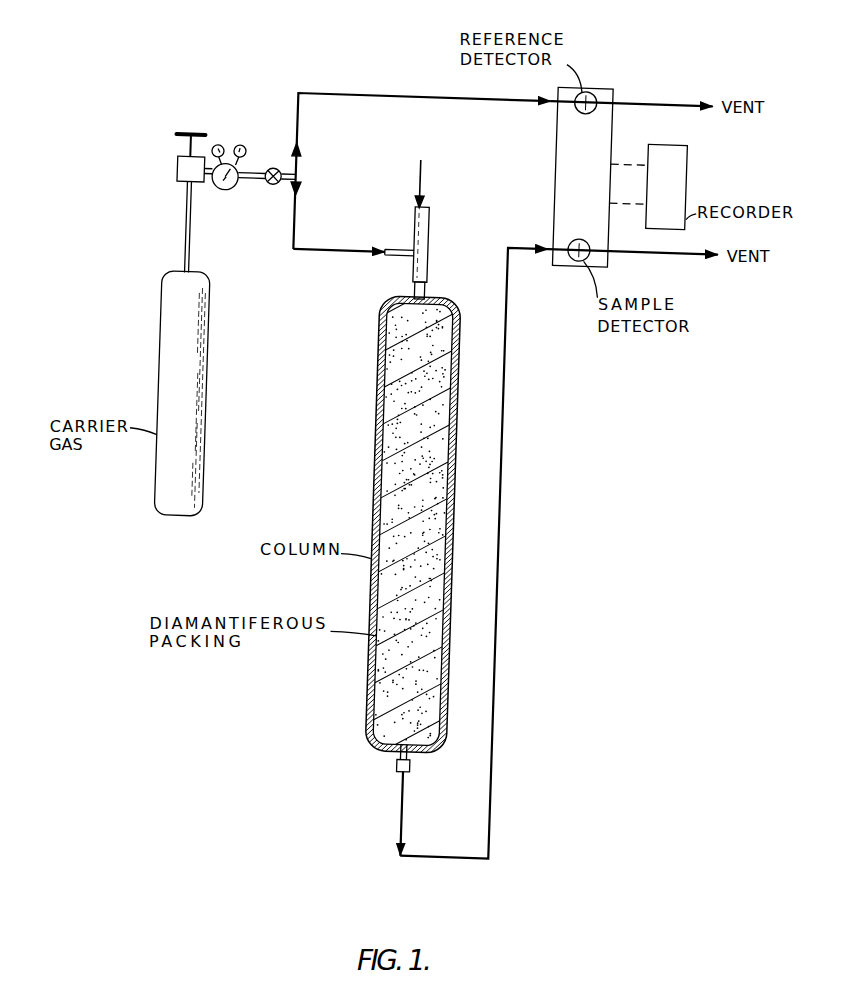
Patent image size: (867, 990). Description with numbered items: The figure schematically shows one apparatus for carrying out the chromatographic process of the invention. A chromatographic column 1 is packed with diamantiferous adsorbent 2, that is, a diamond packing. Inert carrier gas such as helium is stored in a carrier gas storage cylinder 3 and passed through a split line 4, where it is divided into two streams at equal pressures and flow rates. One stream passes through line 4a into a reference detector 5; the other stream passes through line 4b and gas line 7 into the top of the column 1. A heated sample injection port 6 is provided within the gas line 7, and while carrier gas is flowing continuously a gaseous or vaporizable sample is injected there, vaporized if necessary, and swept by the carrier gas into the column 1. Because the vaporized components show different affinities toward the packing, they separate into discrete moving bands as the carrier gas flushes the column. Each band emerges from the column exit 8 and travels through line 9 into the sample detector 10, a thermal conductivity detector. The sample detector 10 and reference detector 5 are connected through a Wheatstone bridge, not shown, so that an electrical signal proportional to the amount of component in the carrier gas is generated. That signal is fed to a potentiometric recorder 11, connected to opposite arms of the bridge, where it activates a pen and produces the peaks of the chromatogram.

The chromatographic column 1 is at (372, 372).
The diamantiferous adsorbent 2 is at (386, 430).
The carrier gas storage cylinder 3 is at (203, 364).
The split line 4 is at (287, 181).
The line to reference detector 4a is at (323, 98).
The line to column 4b is at (300, 253).
The reference detector 5 is at (569, 109).
The sample injection port 6 is at (419, 212).
The gas line 7 is at (419, 262).
The column exit 8 is at (404, 768).
The line to sample detector 9 is at (499, 730).
The sample detector 10 is at (565, 236).
The recorder 11 is at (660, 174).